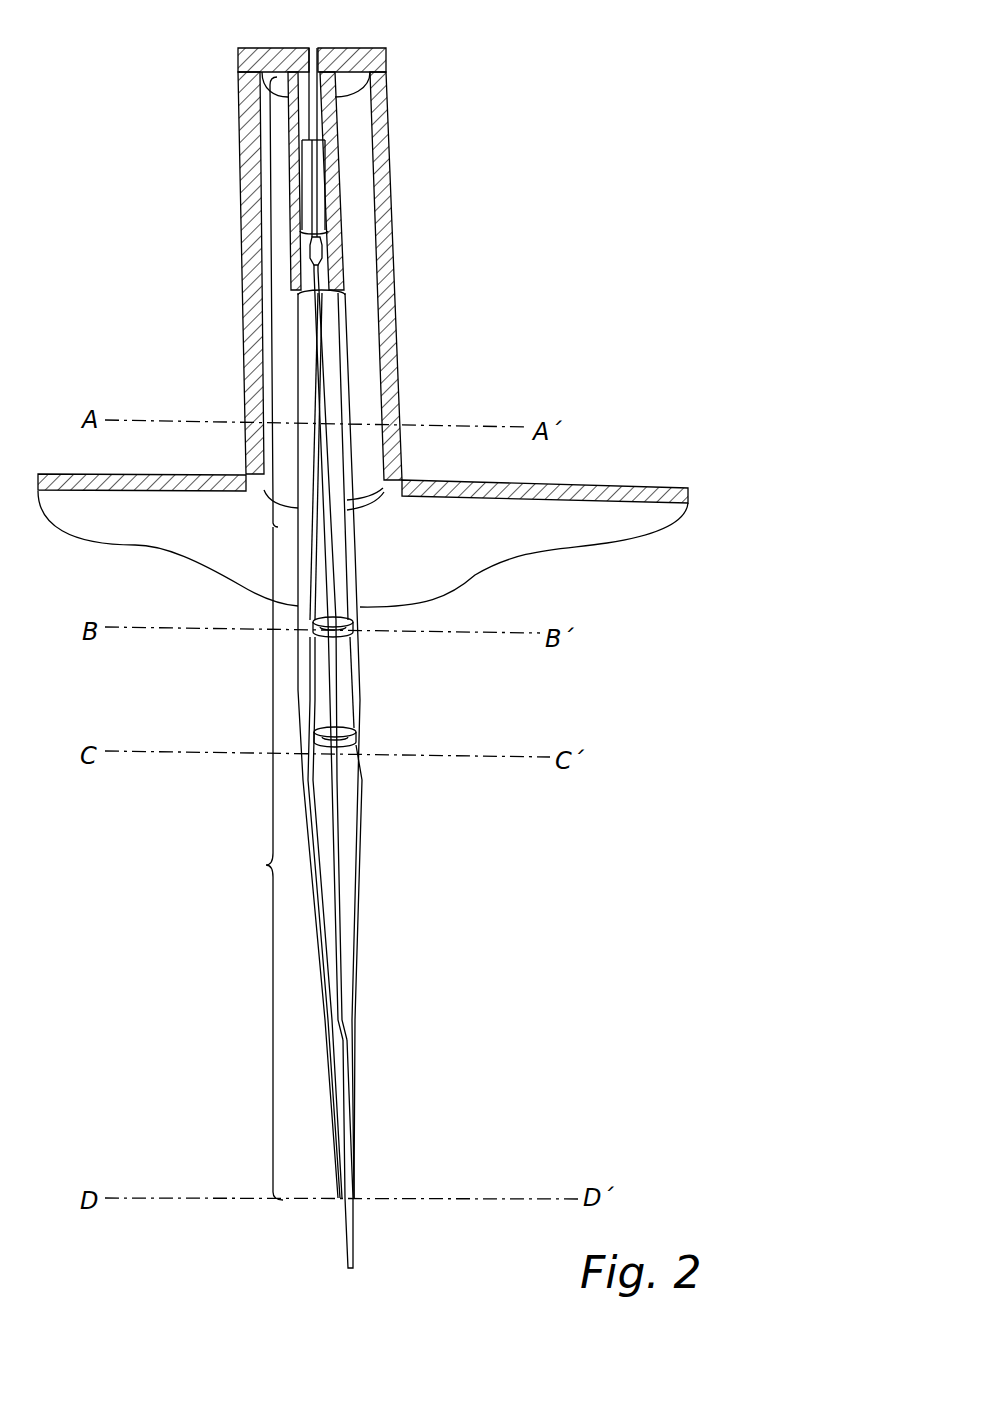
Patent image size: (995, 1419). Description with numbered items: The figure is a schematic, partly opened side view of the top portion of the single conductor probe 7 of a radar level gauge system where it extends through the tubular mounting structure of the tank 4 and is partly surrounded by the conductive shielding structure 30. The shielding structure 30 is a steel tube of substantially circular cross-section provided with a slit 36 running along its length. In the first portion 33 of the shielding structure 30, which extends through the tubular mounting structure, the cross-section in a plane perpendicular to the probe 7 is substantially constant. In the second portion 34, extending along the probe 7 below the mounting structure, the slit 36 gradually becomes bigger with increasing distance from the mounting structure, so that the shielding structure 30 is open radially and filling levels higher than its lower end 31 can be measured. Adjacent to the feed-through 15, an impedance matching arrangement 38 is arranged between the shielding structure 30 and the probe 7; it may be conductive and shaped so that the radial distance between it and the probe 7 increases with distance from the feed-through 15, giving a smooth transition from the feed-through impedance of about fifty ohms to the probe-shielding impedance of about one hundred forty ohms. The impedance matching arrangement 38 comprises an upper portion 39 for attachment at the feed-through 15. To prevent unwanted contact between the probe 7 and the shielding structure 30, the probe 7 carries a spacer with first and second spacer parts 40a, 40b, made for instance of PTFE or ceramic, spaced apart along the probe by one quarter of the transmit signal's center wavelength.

The feed-through 15 is at (327, 45).
The upper portion 39 is at (363, 73).
The impedance matching arrangement 38 is at (333, 197).
The first portion 33 is at (270, 293).
The tank 4 is at (83, 473).
The shielding structure 30 is at (340, 385).
The slit 36 is at (330, 462).
The single conductor probe 7 is at (342, 1072).
The lower end 31 is at (338, 1200).
The first spacer part 40a is at (340, 615).
The second spacer part 40b is at (345, 727).
The second portion 34 is at (255, 863).